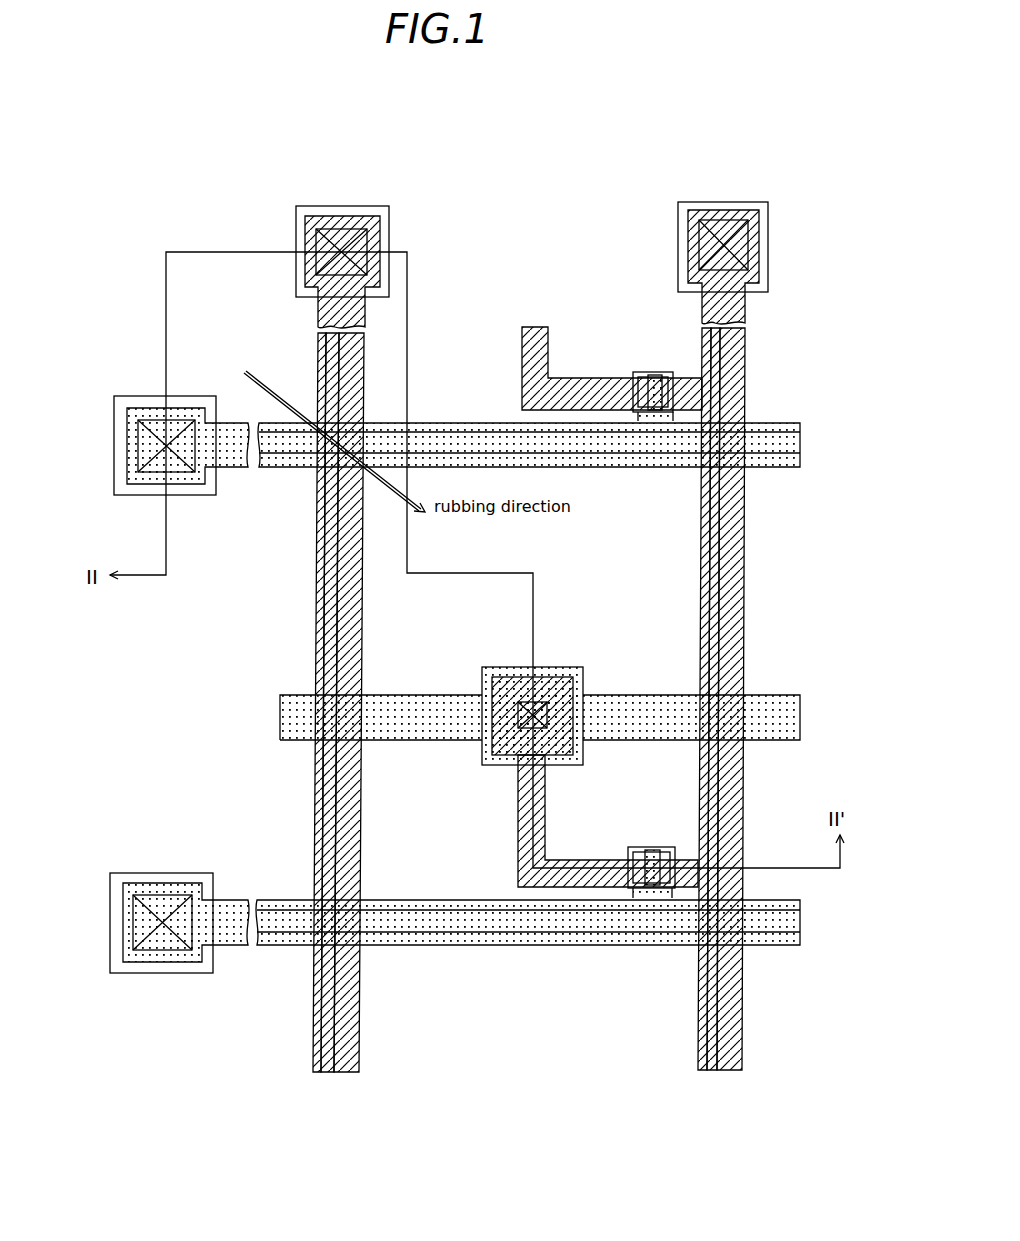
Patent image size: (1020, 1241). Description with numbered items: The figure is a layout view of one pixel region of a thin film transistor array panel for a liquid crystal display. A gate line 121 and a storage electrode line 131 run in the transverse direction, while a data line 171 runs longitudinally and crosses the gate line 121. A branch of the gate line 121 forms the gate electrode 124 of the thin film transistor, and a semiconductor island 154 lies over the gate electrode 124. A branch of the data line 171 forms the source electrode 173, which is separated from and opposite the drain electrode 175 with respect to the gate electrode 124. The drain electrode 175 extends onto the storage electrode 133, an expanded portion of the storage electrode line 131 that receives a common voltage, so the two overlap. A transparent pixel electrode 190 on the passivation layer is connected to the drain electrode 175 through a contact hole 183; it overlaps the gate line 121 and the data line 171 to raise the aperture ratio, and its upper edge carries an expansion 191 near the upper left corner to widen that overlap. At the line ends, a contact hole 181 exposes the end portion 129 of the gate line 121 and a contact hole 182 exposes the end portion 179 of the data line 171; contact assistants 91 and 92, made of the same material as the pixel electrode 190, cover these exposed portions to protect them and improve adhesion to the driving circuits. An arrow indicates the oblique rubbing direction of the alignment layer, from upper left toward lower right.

The contact assistant 92 is at (395, 215).
The end portion of data line 179 is at (313, 212).
The contact hole 182 is at (356, 226).
The contact assistant 91 is at (143, 396).
The contact hole 181 is at (124, 438).
The end portion of gate line 129 is at (197, 495).
The gate line 121 is at (488, 423).
The expansion 191 is at (428, 457).
The pixel electrode 190 is at (702, 548).
The data line 171 is at (318, 655).
The storage electrode line 131 is at (428, 742).
The storage electrode 133 is at (490, 668).
The contact hole 183 is at (565, 678).
The drain electrode 175 is at (548, 785).
The gate electrode 124 is at (658, 847).
The semiconductor island 154 is at (636, 878).
The source electrode 173 is at (650, 892).